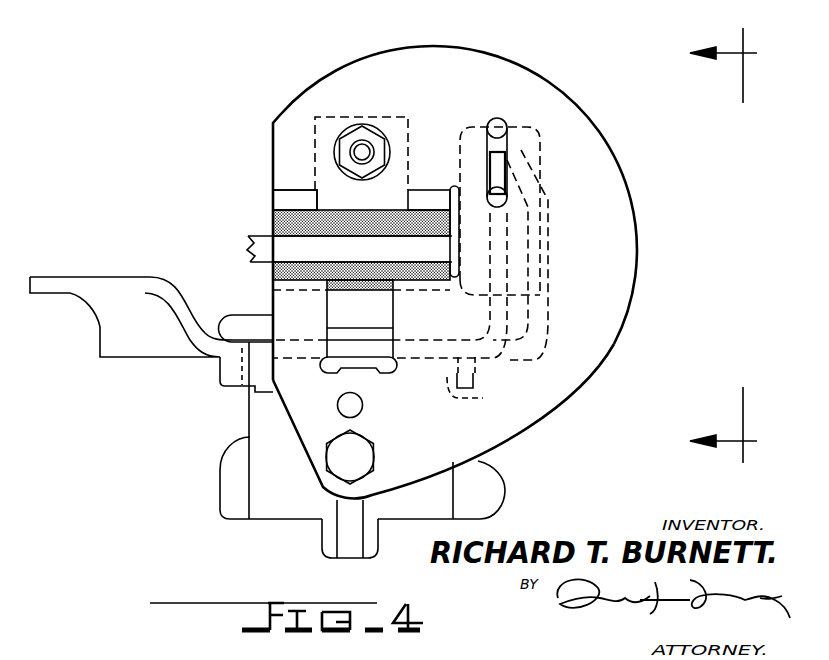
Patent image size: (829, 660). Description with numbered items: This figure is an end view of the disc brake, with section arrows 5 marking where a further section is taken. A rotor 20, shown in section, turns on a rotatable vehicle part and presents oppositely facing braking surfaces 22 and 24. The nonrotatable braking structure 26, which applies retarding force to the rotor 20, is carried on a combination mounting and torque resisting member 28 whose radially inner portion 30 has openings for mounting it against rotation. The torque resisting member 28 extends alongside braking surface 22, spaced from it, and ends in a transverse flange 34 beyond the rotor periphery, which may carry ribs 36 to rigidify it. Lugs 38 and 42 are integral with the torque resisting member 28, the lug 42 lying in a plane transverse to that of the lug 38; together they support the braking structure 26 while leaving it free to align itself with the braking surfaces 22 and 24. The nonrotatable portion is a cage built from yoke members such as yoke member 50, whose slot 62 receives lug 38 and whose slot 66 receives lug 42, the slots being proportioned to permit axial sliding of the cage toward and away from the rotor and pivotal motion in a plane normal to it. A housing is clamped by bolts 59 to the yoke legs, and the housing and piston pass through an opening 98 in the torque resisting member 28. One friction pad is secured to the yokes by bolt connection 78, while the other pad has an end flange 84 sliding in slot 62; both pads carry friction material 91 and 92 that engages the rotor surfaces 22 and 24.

The rotor 20 is at (280, 250).
The braking surface 22 is at (278, 282).
The braking surface 24 is at (305, 215).
The nonrotatable braking structure 26 is at (637, 172).
The combination mounting and torque resisting member 28 is at (110, 340).
The radially inner portion 30 is at (42, 285).
The transverse flange 34 is at (548, 300).
The ribs 36 is at (540, 232).
The lug 38 is at (345, 350).
The lug 42 is at (495, 180).
The yoke member 50 is at (577, 383).
The bolts 59 is at (347, 462).
The slot 62 is at (360, 373).
The slot 66 is at (503, 127).
The bolt connection 78 is at (355, 137).
The end flange 84 is at (363, 313).
The friction material 91 is at (370, 267).
The friction material 92 is at (313, 223).
The opening 98 is at (483, 391).
The section line 5- 5 is at (711, 245).